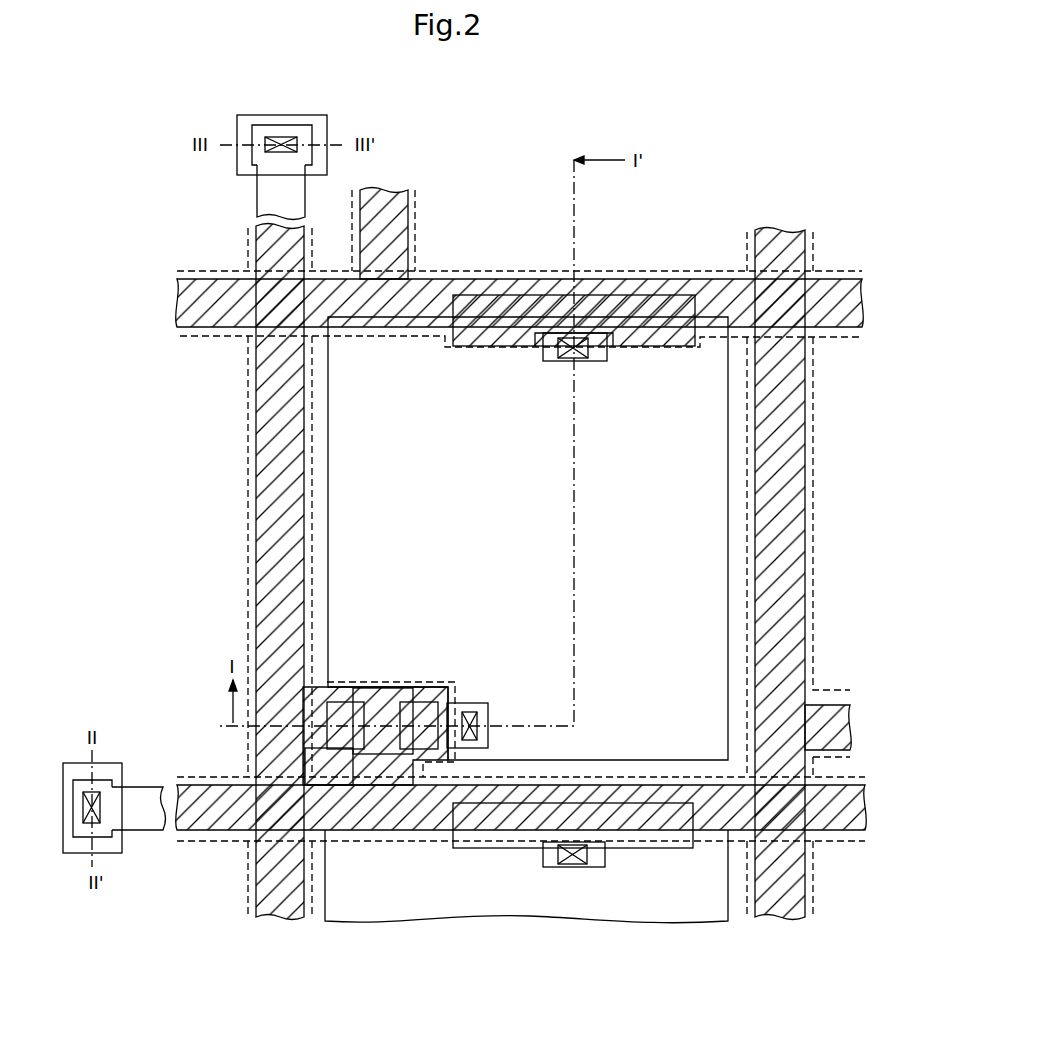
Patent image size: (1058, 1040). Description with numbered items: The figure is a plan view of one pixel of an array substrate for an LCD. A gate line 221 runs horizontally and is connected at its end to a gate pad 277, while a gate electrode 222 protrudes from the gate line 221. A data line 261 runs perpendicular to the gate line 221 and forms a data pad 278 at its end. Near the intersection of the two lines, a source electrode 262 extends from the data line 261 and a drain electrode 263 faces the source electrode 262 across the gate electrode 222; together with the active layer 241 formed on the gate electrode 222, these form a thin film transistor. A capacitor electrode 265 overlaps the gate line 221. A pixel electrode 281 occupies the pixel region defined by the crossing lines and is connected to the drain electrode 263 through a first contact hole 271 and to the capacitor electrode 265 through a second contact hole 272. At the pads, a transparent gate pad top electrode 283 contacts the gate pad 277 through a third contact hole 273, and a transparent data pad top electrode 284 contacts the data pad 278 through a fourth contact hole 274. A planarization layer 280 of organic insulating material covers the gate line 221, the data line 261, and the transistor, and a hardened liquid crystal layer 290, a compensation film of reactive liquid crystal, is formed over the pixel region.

The gate line 221 is at (437, 290).
The gate electrode 222 is at (385, 690).
The active layer 241 is at (352, 752).
The data line 261 is at (256, 465).
The source electrode 262 is at (374, 755).
The drain electrode 263 is at (407, 692).
The capacitor electrode 265 is at (648, 347).
The first contact hole 271 is at (470, 712).
The second contact hole 272 is at (583, 335).
The third contact hole 273 is at (93, 787).
The fourth contact hole 274 is at (280, 137).
The gate pad 277 is at (107, 837).
The data pad 278 is at (258, 127).
The planarization layer 280 is at (252, 423).
The pixel electrode 281 is at (328, 538).
The gate pad top electrode 283 is at (120, 772).
The data pad top electrode 284 is at (240, 160).
The hardened liquid crystal layer 290 is at (695, 482).